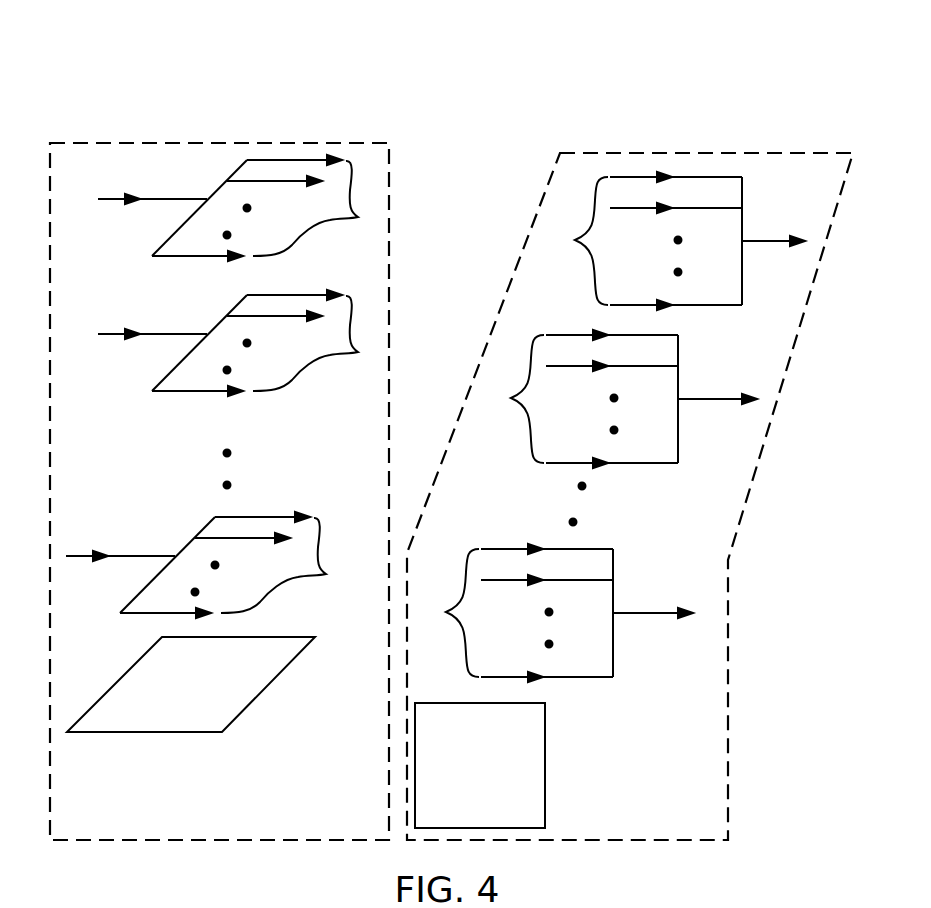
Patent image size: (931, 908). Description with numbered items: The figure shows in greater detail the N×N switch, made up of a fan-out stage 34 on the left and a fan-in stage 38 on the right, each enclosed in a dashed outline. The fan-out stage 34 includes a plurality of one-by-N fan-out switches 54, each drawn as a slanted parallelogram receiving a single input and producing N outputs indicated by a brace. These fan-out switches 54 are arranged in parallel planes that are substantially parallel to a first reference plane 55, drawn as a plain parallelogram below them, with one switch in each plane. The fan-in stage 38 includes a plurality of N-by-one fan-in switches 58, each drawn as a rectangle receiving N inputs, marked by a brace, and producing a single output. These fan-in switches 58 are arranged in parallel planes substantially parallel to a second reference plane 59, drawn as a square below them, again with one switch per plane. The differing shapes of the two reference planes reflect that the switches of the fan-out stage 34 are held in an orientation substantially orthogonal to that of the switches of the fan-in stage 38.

The fan-out stage 34 is at (219, 143).
The 1×N fan-out switch 54 is at (300, 160).
The first reference plane 55 is at (269, 683).
The fan-in stage 38 is at (686, 153).
The N×1 fan-in switch 58 is at (742, 177).
The second reference plane 59 is at (545, 767).